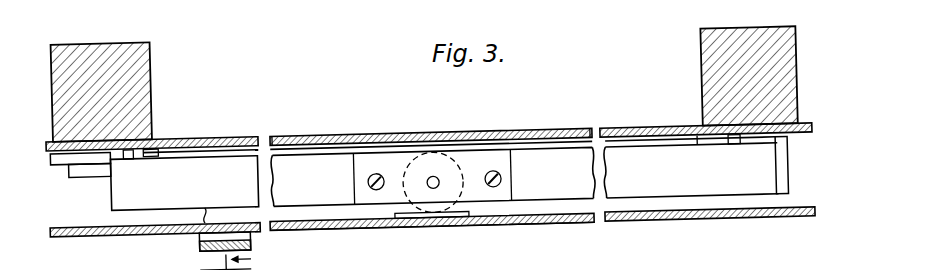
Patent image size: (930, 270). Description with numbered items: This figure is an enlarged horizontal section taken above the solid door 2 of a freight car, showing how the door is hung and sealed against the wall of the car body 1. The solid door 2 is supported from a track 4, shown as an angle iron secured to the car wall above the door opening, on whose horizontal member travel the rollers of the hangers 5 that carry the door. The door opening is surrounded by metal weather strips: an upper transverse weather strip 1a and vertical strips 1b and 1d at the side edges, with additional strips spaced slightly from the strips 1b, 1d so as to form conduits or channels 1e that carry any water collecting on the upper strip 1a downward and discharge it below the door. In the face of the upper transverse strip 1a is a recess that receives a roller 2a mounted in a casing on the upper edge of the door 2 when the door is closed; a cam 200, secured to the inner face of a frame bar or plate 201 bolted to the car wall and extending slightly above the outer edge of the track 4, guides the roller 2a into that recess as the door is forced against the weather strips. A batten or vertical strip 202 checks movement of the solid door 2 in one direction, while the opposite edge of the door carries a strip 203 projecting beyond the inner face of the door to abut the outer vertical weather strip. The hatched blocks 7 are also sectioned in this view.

The body of a freight car 1 is at (388, 146).
The upper transverse weather strip 1a is at (290, 151).
The weather strip 1b is at (705, 143).
The weather strip 1d is at (158, 141).
The conduits or channels 1e is at (128, 162).
The solid door 2 is at (675, 196).
The roller 2a is at (437, 216).
The track 4 is at (505, 220).
The hangers 5 is at (197, 251).
The blocks 7 is at (152, 91).
The cam 200 is at (412, 227).
The frame bar or plate 201 is at (351, 229).
The batten or vertical strip 202 is at (92, 168).
The strip 203 is at (783, 167).